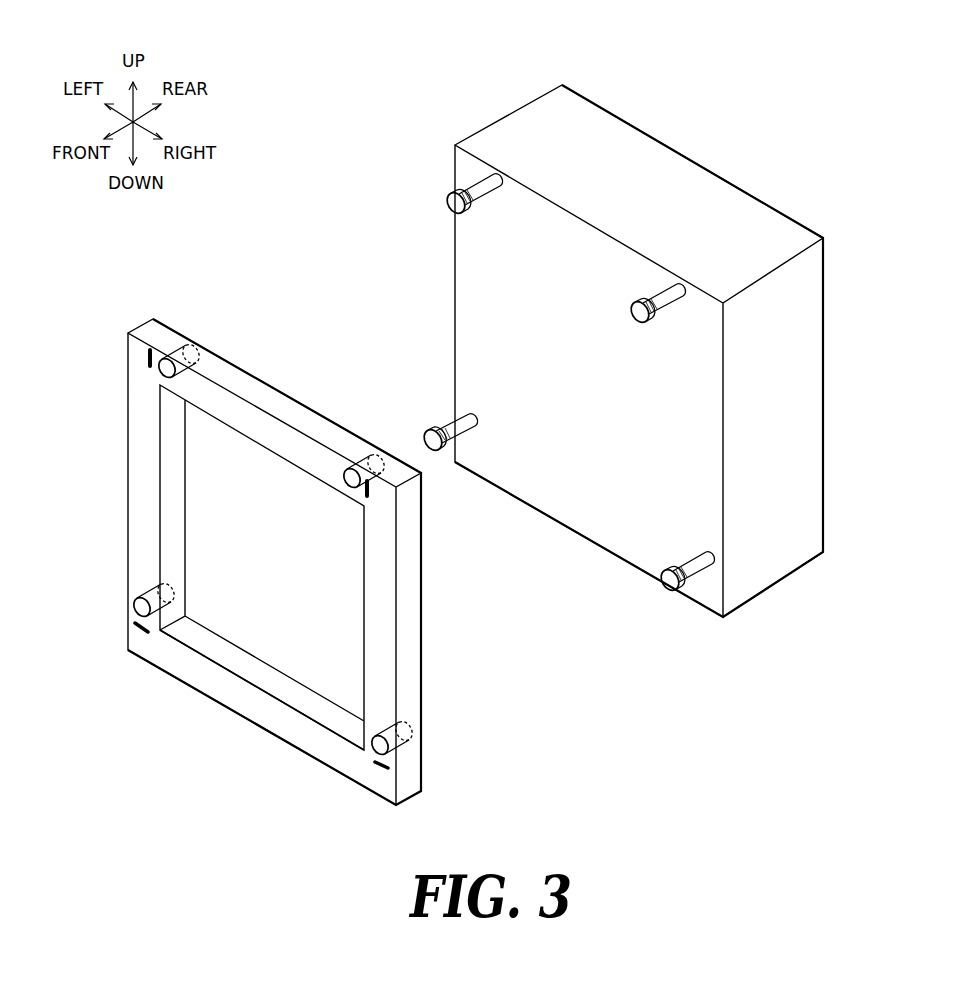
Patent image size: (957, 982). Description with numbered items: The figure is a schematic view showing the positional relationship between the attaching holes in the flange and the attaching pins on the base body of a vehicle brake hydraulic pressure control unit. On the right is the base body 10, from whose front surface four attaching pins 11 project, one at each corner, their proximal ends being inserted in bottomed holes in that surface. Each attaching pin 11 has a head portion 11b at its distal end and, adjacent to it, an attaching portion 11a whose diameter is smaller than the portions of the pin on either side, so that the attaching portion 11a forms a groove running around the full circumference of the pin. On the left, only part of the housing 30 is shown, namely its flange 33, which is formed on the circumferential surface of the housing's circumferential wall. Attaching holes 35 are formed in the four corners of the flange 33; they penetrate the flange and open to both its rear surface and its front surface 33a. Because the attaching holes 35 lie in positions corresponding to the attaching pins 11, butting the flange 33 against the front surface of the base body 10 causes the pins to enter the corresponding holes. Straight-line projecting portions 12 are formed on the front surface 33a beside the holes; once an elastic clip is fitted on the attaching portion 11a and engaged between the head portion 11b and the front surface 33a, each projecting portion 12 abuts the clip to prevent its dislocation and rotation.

The base body 10 is at (515, 110).
The attaching pin 11 is at (542, 379).
The attaching portion 11a is at (565, 341).
The head portion 11b is at (524, 391).
The projecting portion 12 is at (116, 473).
The housing 30 is at (262, 559).
The flange 33 is at (276, 559).
The front surface 33a is at (210, 678).
The attaching hole 35 is at (254, 547).